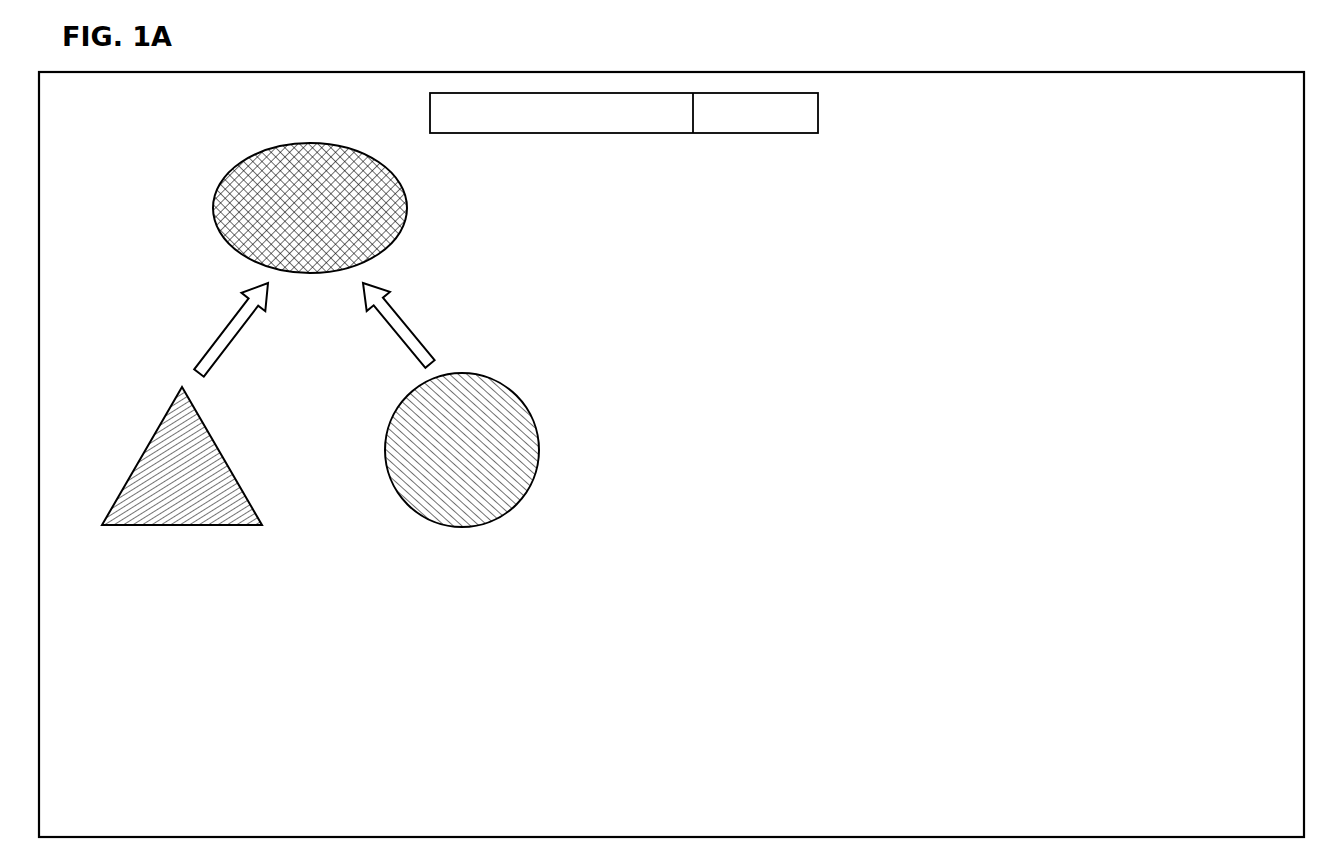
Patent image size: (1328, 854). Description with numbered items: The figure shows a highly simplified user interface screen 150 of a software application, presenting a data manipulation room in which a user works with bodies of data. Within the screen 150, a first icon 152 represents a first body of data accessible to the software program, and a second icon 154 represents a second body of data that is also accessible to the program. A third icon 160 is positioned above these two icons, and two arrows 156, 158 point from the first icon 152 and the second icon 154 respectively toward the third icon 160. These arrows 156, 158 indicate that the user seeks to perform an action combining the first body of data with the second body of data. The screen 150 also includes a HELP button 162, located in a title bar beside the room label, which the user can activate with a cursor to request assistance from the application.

The user interface screen 150 is at (355, 72).
The first icon 152 is at (187, 447).
The second icon 154 is at (412, 420).
The arrow 156 is at (230, 333).
The arrow 158 is at (383, 305).
The third icon 160 is at (257, 160).
The HELP button 162 is at (788, 122).